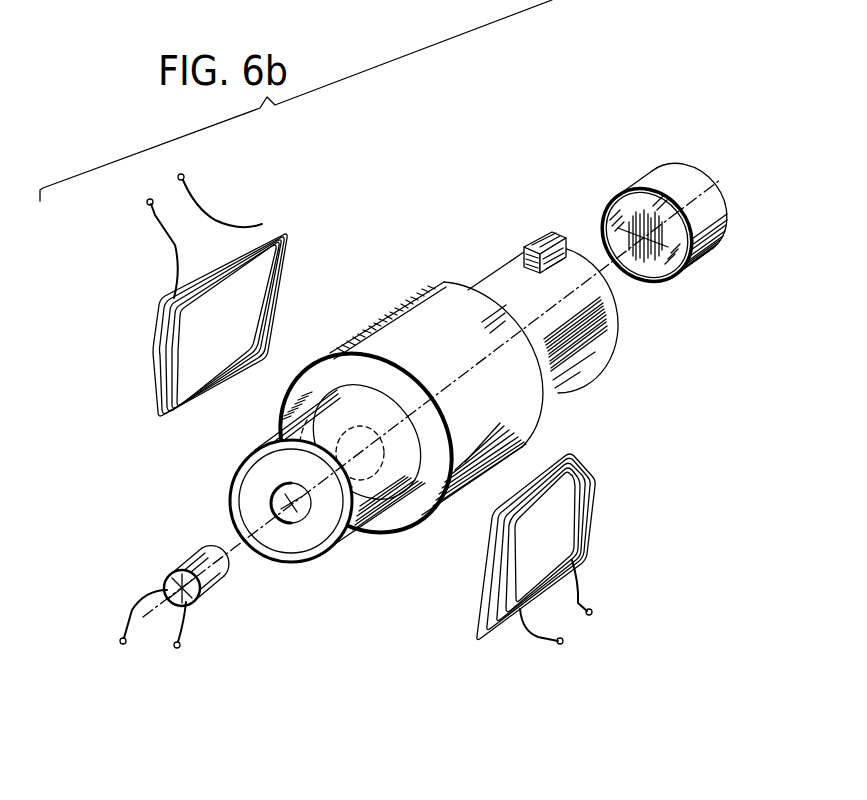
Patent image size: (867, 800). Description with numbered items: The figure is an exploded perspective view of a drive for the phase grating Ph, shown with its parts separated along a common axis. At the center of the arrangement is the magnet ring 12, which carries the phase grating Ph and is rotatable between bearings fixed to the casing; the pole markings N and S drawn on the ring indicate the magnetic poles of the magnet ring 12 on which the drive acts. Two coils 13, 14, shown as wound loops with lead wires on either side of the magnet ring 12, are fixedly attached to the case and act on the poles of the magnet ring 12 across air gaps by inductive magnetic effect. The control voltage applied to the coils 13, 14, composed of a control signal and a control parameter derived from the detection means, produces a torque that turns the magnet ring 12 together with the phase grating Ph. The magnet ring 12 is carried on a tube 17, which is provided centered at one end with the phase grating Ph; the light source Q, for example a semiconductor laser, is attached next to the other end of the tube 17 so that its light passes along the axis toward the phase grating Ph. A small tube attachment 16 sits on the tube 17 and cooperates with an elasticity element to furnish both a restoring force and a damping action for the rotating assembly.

The magnet ring 12 is at (394, 443).
The coil 13 is at (264, 223).
The coil 14 is at (553, 590).
The tube attachment 16 is at (546, 232).
The tube 17 is at (480, 282).
The light source Q is at (189, 560).
The phase grating Ph is at (700, 252).
The north pole N is at (410, 399).
The south pole S is at (305, 481).